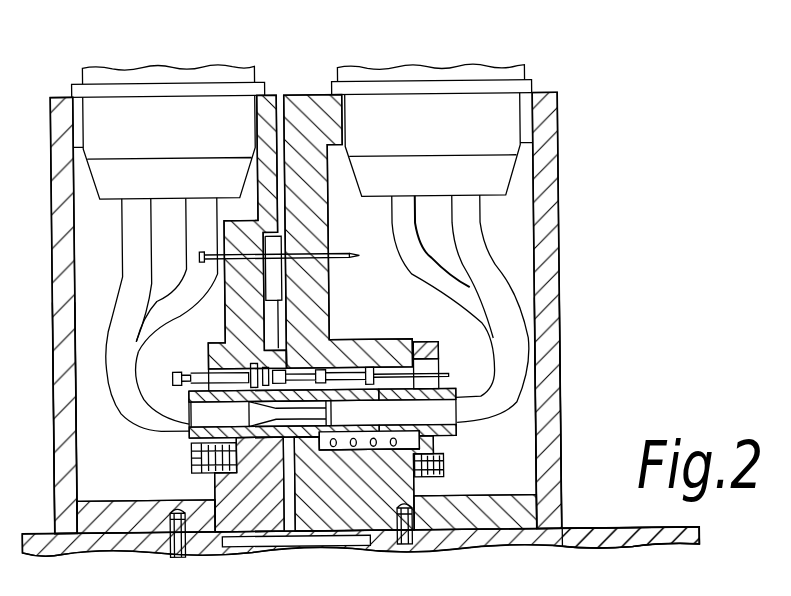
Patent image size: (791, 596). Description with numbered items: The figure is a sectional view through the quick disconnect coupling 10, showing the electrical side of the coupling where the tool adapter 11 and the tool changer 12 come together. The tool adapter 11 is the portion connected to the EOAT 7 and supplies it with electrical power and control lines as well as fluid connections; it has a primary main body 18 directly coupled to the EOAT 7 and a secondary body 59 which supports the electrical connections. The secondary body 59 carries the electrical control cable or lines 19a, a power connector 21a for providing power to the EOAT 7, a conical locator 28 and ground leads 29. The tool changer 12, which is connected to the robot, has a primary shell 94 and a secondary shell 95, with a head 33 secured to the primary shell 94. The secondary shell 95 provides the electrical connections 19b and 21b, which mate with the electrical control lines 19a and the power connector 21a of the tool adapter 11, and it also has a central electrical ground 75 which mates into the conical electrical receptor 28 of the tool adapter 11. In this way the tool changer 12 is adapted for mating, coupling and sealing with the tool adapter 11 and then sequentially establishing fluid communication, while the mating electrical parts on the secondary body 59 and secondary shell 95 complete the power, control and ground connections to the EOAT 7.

The EOAT 7 is at (30, 545).
The quick disconnect coupling 10 is at (60, 86).
The tool adapter 11 is at (51, 462).
The tool changer 12 is at (567, 462).
The primary main body 18 is at (140, 540).
The electrical control cable 19a is at (218, 262).
The electrical connections 19b is at (346, 256).
The power connector 21a is at (140, 406).
The electrical connections 21b is at (470, 392).
The conical locator 28 is at (278, 432).
The ground leads 29 is at (135, 247).
The head 33 is at (348, 460).
The secondary body 59 is at (57, 131).
The central electrical ground 75 is at (480, 415).
The primary shell 94 is at (585, 540).
The secondary shell 95 is at (560, 209).